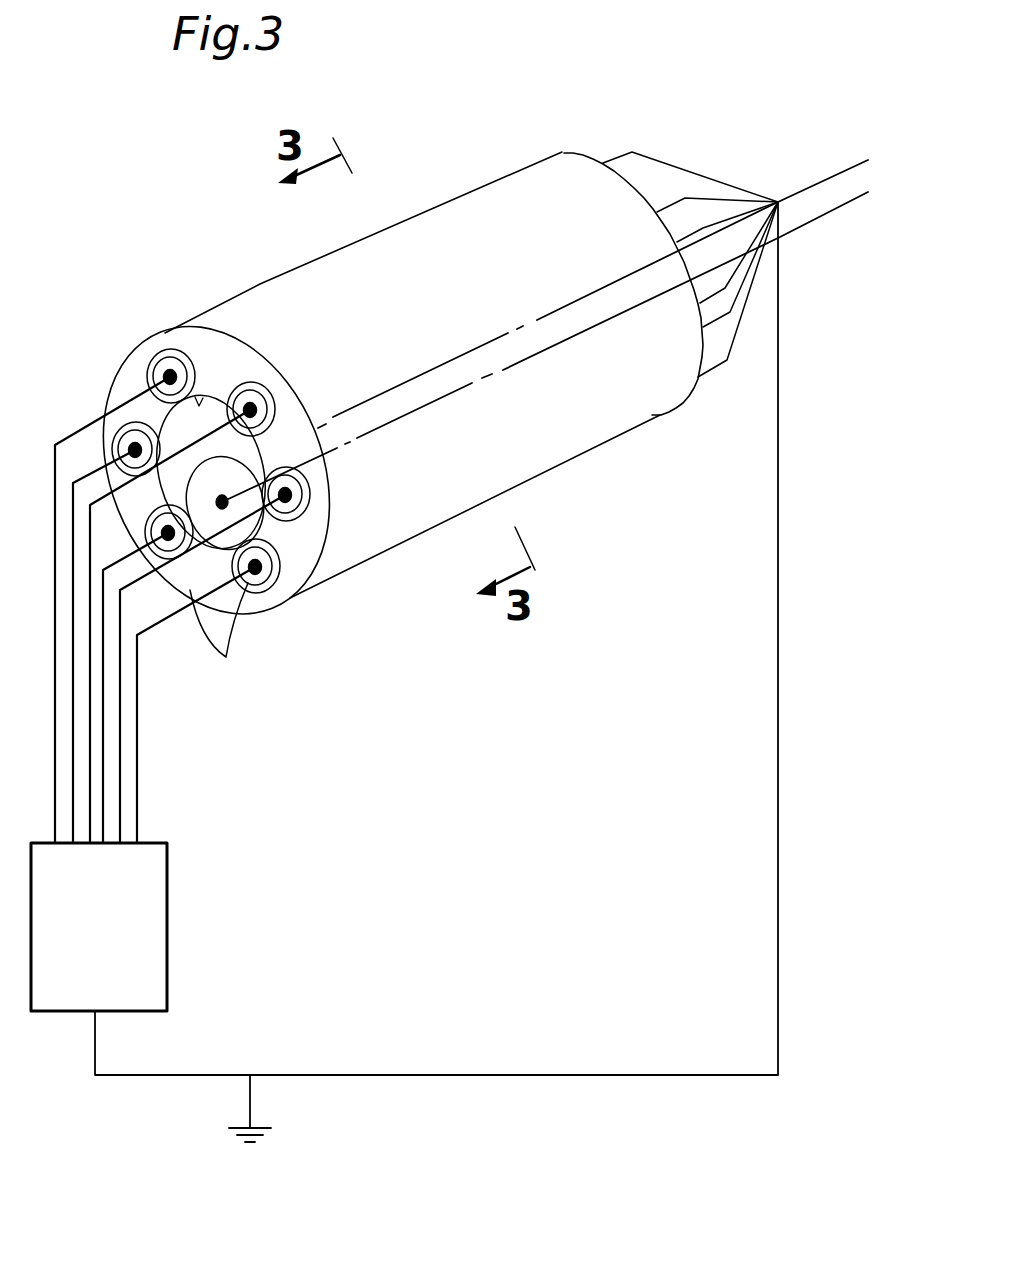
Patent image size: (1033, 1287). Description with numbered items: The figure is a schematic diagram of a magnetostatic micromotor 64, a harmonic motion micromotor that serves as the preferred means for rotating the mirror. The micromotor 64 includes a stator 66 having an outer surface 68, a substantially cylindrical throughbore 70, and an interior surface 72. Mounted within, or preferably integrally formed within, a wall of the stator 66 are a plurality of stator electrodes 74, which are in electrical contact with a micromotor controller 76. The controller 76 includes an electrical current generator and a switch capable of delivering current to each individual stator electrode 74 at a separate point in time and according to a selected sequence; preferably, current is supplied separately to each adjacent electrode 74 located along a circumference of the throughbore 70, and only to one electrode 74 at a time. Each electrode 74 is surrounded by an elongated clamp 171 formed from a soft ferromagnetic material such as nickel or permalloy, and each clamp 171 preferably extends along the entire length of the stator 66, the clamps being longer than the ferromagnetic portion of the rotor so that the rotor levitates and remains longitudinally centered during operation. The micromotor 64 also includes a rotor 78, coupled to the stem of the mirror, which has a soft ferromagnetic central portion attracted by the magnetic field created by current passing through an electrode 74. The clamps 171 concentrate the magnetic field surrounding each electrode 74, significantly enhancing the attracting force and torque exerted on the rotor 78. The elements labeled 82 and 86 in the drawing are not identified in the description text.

The micromotor 64 is at (474, 142).
The stator 66 is at (500, 195).
The outer surface 68 is at (643, 407).
The throughbore 70 is at (165, 430).
The interior surface 72 is at (200, 383).
The stator electrodes 74 is at (226, 657).
The micromotor controller 76 is at (145, 878).
The rotor 78 is at (243, 533).
The cable 82 is at (838, 174).
The center conductor 86 is at (843, 208).
The elongated clamps 171 is at (273, 397).